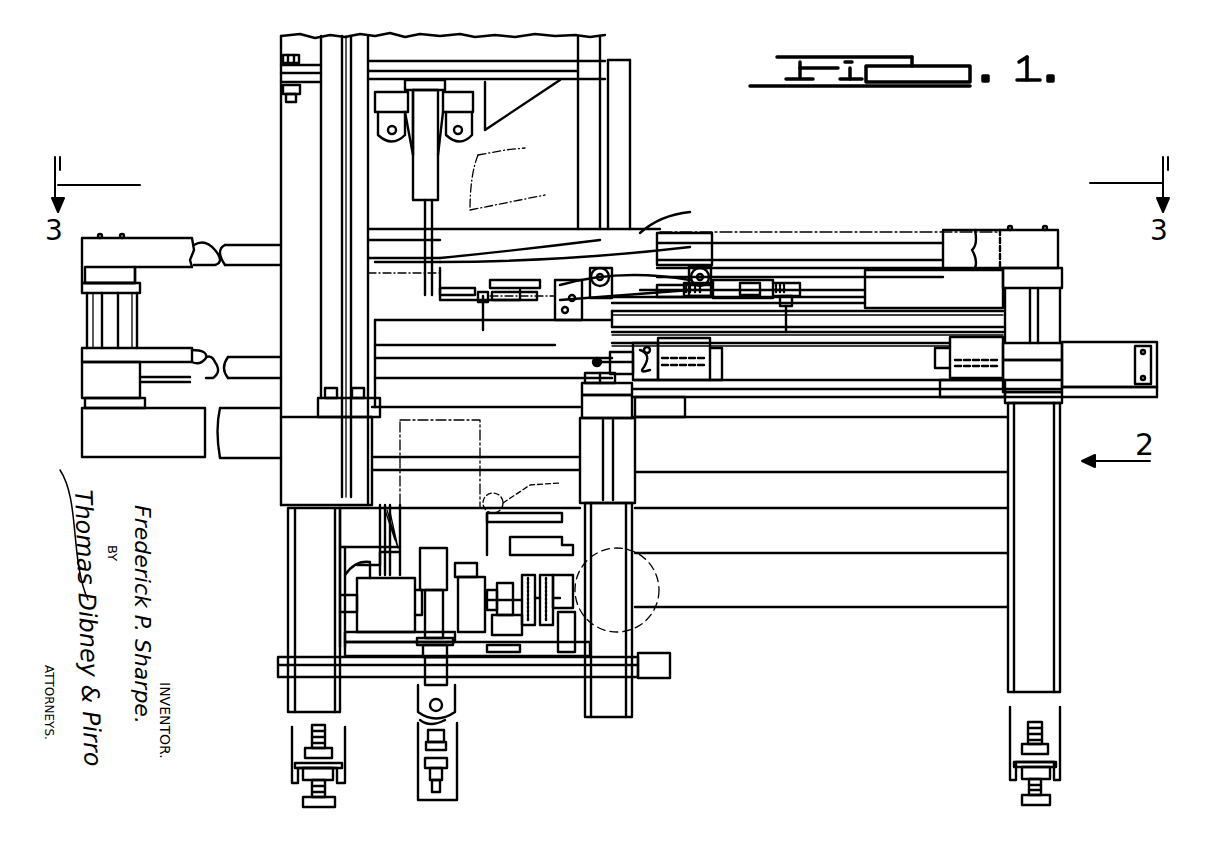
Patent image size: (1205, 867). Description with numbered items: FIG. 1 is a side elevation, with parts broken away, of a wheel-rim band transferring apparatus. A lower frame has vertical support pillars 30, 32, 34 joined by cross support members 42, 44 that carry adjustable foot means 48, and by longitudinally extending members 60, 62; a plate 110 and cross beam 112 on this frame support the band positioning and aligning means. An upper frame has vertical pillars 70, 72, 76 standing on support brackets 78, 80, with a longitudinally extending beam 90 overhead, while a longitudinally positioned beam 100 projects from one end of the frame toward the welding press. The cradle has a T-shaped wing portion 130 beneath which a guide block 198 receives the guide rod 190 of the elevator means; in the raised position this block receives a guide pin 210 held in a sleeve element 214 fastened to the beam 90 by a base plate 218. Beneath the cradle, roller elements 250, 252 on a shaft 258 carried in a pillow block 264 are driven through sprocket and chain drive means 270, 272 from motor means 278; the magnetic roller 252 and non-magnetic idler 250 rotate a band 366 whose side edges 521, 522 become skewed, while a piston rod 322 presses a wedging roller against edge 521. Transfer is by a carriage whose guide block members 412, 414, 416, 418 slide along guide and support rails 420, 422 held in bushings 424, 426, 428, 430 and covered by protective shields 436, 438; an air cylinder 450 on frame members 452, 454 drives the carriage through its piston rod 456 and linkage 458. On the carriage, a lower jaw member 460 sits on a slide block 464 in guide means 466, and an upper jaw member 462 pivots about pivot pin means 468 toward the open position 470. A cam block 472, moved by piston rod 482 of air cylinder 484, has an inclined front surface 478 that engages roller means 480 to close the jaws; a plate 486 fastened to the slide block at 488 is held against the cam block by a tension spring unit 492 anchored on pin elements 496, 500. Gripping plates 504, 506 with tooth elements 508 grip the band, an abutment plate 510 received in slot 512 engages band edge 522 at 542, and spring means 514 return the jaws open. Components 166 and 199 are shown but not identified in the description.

The vertical support pillar 30 is at (292, 578).
The vertical support pillar 32 is at (625, 708).
The vertical support pillar 34 is at (1045, 640).
The cross support member 42 is at (292, 770).
The cross support member 44 is at (1010, 764).
The adjustable foot means 48 is at (1055, 795).
The longitudinally extending member 60 is at (550, 470).
The longitudinally extending member 62 is at (345, 556).
The upper frame vertical pillar 70 is at (330, 207).
The upper frame vertical pillar 72 is at (618, 150).
The upper frame vertical pillar 76 is at (290, 112).
The support bracket 78 is at (340, 428).
The support bracket 80 is at (630, 420).
The longitudinally extending beam 90 is at (545, 72).
The longitudinally positioned beam 100 is at (155, 455).
The plate 110 is at (665, 655).
The cross beam 112 is at (665, 668).
The wing portion 130 is at (435, 546).
The hanger 166 is at (418, 762).
The guide rod 190 is at (418, 706).
The guide block 198 is at (381, 592).
The shaft 199 is at (425, 660).
The guide pin 210 is at (436, 222).
The sleeve element 214 is at (445, 190).
The base plate 218 is at (555, 85).
The roller element 250 is at (362, 628).
The roller element 252 is at (480, 575).
The shaft 258 is at (365, 605).
The pillow block 264 is at (510, 650).
The sprocket and chain drive means 270 is at (530, 660).
The sprocket and chain drive means 272 is at (548, 650).
The motor means 278 is at (655, 583).
The piston rod 322 is at (518, 195).
The band 366 is at (412, 425).
The guide block member 412 is at (705, 410).
The guide block member 414 is at (965, 398).
The guide block member 416 is at (958, 240).
The guide block member 418 is at (688, 235).
The guide and support rail 420 is at (240, 360).
The guide and support rail 422 is at (205, 240).
The bushing 424 is at (120, 390).
The bushing 426 is at (1068, 358).
The bushing 428 is at (1060, 275).
The bushing 430 is at (118, 278).
The protective shield 436 is at (155, 350).
The protective shield 438 is at (150, 240).
The air cylinder 450 is at (1112, 355).
The frame member 452 is at (1092, 400).
The frame member 454 is at (1110, 340).
The piston rod 456 is at (677, 359).
The linkage 458 is at (592, 362).
The lower jaw member 460 is at (478, 320).
The upper jaw member 462 is at (510, 260).
The slide block 464 is at (600, 322).
The guide means 466 is at (870, 325).
The pivot pin means 468 is at (605, 275).
The open position 470 is at (520, 322).
The cam block 472 is at (760, 275).
The inclined front surface 478 is at (800, 255).
The roller means 480 is at (715, 280).
The piston rod 482 is at (832, 290).
The air cylinder 484 is at (950, 292).
The plate 486 is at (778, 340).
The fastening point 488 is at (786, 340).
The tension spring unit 492 is at (760, 278).
The pin element 496 is at (688, 273).
The pin element 500 is at (793, 283).
The gripping plate 504 is at (450, 306).
The gripping plate 506 is at (475, 275).
The tooth elements 508 is at (442, 298).
The abutment plate 510 is at (505, 305).
The slot 512 is at (535, 278).
The spring means 514 is at (575, 275).
The side edge 521 is at (340, 273).
The side edge 522 is at (473, 354).
The abutment point 542 is at (478, 305).